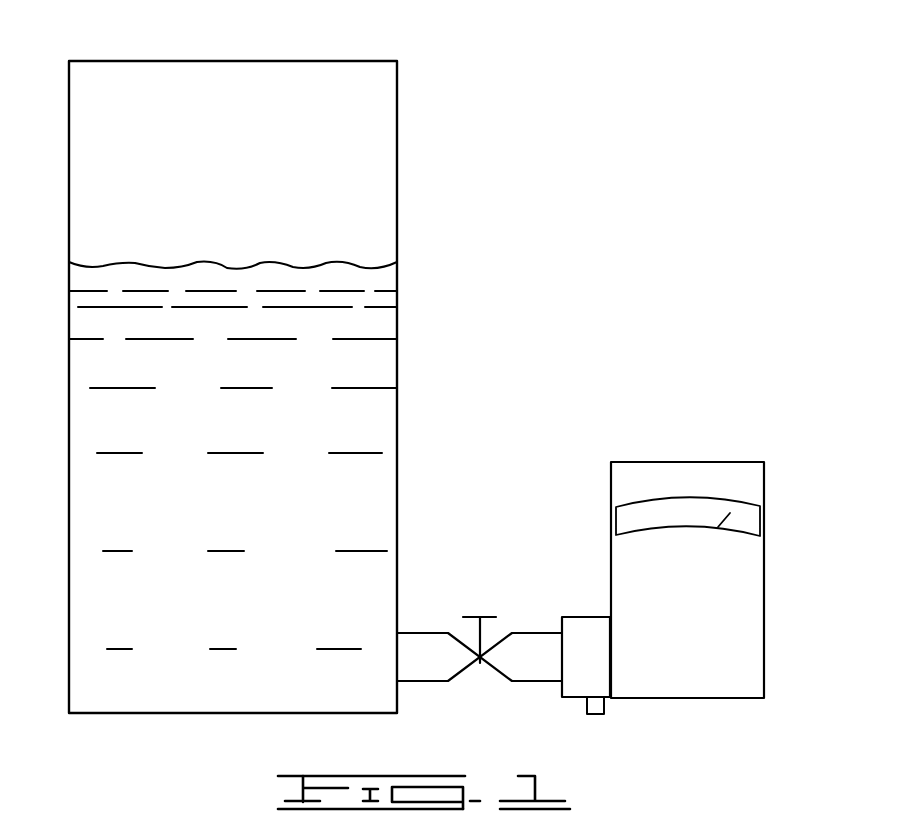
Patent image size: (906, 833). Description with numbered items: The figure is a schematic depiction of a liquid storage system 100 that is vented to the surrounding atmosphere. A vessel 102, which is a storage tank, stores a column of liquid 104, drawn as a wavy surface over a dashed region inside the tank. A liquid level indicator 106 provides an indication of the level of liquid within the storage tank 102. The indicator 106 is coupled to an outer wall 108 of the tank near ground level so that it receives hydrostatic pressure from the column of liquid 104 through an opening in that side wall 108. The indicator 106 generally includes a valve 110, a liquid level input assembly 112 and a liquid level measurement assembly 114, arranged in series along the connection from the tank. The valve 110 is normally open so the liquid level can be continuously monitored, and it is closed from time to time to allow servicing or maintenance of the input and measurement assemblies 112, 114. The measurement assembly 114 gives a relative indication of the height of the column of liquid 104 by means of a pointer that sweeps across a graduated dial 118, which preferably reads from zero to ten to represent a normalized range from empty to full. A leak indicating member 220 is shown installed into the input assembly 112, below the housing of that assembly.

The liquid storage system 100 is at (562, 212).
The vessel 102 is at (198, 61).
The column of liquid 104 is at (174, 266).
The liquid level indicator 106 is at (557, 523).
The outer wall 108 is at (397, 601).
The valve 110 is at (497, 673).
The liquid level input assembly 112 is at (587, 617).
The liquid level measurement assembly 114 is at (737, 638).
The graduated dial 118 is at (688, 498).
The leak indicating member 220 is at (604, 706).